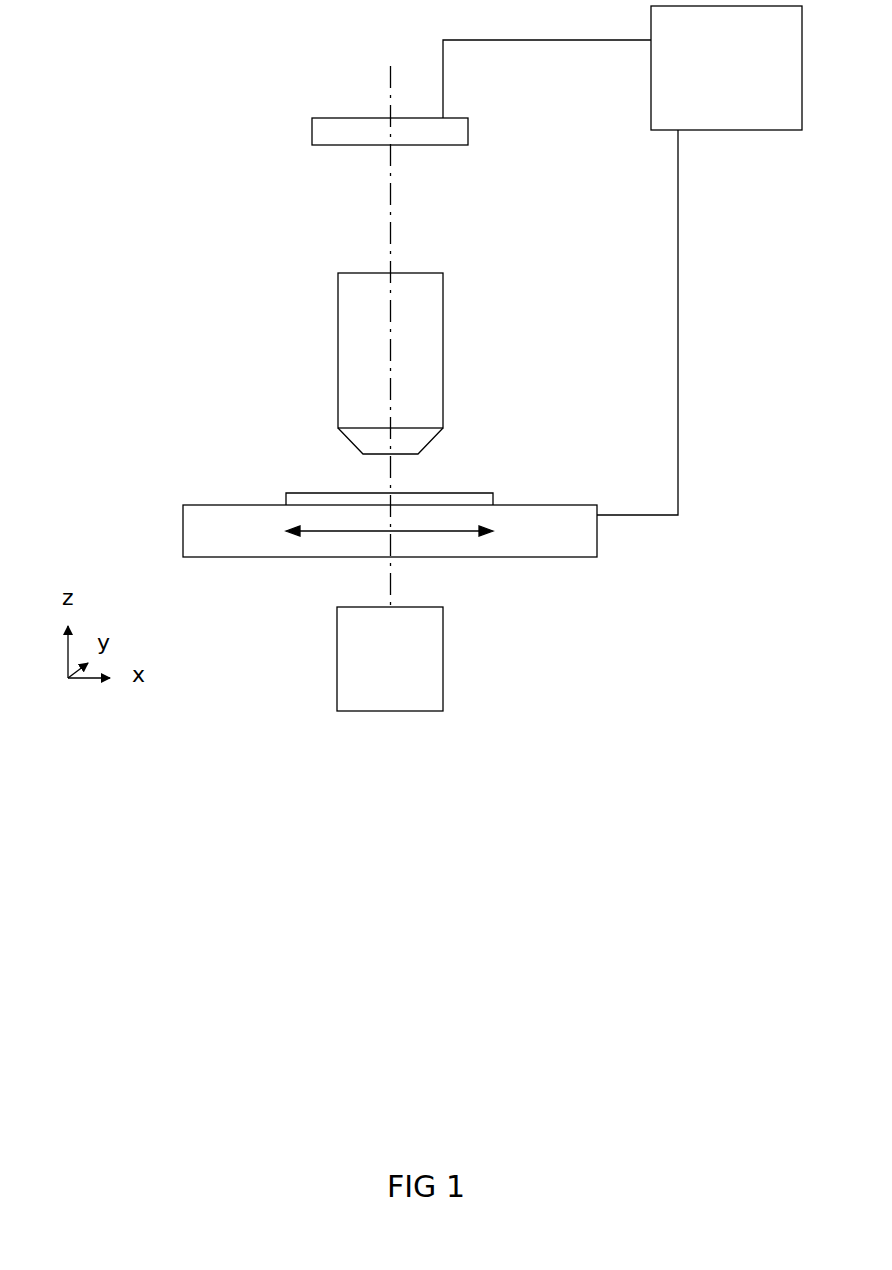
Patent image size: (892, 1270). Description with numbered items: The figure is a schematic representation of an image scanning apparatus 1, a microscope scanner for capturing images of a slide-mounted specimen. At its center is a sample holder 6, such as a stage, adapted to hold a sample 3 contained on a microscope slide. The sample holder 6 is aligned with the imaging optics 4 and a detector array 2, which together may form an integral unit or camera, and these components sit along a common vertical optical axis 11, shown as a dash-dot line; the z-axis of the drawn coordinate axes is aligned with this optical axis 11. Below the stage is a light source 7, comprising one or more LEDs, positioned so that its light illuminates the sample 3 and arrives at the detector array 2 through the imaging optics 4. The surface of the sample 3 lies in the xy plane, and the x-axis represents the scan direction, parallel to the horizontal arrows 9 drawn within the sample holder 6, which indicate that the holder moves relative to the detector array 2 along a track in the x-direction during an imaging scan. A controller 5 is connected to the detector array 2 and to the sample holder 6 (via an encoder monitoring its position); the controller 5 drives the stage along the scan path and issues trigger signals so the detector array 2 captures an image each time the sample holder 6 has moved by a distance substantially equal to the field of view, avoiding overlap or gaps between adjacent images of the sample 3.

The image scanning apparatus 1 is at (252, 160).
The detector array 2 is at (468, 135).
The sample 3 is at (493, 497).
The imaging optics 4 is at (443, 335).
The controller 5 is at (622, 260).
The sample holder 6 is at (597, 535).
The light source 7 is at (443, 650).
The horizontal arrows 9 is at (403, 538).
The optical axis 11 is at (390, 198).